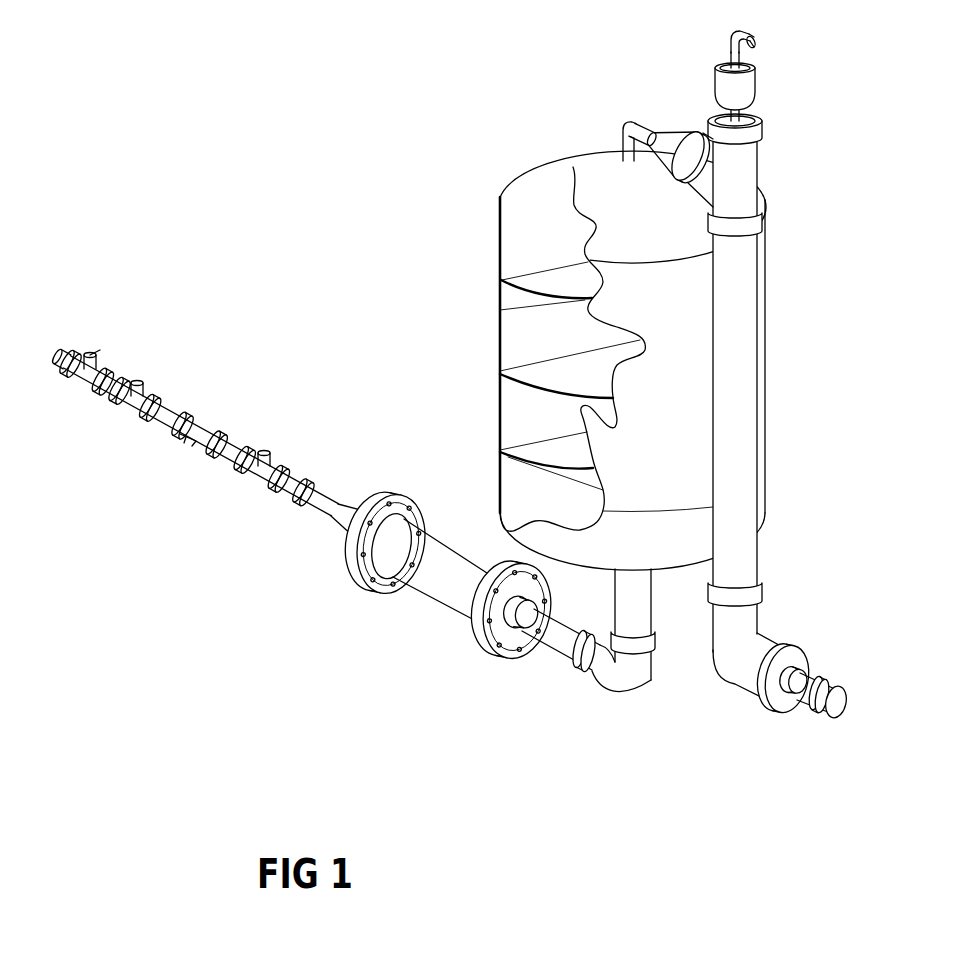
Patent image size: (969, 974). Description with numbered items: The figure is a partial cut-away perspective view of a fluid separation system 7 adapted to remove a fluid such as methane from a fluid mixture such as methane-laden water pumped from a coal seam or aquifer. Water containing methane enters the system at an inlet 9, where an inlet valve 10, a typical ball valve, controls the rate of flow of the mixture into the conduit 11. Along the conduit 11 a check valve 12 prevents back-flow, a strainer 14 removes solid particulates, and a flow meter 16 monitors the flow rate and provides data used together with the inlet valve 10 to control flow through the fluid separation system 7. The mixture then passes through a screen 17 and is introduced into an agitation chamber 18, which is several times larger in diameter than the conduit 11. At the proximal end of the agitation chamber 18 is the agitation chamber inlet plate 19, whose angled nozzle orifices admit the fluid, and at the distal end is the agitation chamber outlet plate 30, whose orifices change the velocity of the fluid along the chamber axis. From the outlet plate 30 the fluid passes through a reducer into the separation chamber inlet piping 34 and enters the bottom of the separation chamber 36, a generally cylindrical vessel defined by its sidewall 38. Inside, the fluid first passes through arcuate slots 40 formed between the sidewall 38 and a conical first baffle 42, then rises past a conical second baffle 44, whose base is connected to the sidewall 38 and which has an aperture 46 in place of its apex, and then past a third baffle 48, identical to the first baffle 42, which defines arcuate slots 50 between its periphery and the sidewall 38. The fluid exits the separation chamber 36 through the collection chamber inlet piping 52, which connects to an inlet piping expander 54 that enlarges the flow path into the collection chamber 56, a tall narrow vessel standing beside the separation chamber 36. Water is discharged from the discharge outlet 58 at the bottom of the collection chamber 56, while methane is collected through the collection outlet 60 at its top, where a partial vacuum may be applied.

The fluid separation system 7 is at (332, 224).
The inlet 9 is at (70, 339).
The inlet valve 10 is at (90, 358).
The conduit 11 is at (152, 436).
The check valve 12 is at (141, 386).
The strainer 14 is at (197, 422).
The flow meter 16 is at (267, 459).
The screen 17 is at (303, 503).
The agitation chamber 18 is at (421, 608).
The agitation chamber inlet plate 19 is at (353, 563).
The agitation chamber outlet plate 30 is at (492, 642).
The separation chamber inlet piping 34 is at (607, 701).
The separation chamber 36 is at (480, 465).
The sidewall 38 is at (570, 448).
The arcuate slots 40 is at (557, 437).
The first baffle 42 is at (587, 467).
The second baffle 44 is at (548, 365).
The aperture 46 is at (595, 347).
The third baffle 48 is at (583, 310).
The arcuate slots 50 is at (565, 282).
The collection chamber inlet piping 52 is at (602, 129).
The inlet piping expander 54 is at (690, 130).
The collection chamber 56 is at (740, 418).
The discharge outlet 58 is at (838, 690).
The collection outlet 60 is at (757, 52).